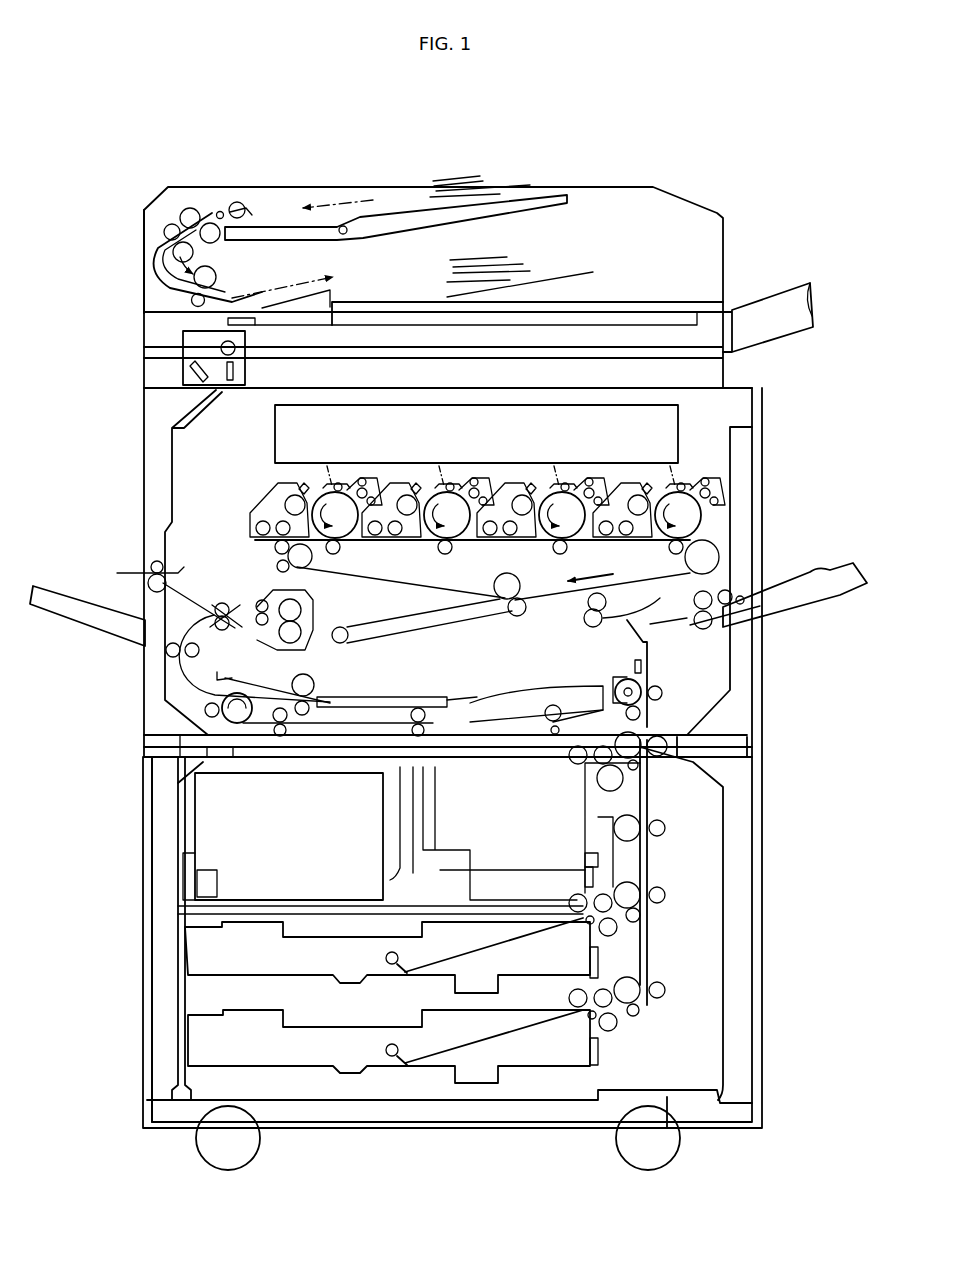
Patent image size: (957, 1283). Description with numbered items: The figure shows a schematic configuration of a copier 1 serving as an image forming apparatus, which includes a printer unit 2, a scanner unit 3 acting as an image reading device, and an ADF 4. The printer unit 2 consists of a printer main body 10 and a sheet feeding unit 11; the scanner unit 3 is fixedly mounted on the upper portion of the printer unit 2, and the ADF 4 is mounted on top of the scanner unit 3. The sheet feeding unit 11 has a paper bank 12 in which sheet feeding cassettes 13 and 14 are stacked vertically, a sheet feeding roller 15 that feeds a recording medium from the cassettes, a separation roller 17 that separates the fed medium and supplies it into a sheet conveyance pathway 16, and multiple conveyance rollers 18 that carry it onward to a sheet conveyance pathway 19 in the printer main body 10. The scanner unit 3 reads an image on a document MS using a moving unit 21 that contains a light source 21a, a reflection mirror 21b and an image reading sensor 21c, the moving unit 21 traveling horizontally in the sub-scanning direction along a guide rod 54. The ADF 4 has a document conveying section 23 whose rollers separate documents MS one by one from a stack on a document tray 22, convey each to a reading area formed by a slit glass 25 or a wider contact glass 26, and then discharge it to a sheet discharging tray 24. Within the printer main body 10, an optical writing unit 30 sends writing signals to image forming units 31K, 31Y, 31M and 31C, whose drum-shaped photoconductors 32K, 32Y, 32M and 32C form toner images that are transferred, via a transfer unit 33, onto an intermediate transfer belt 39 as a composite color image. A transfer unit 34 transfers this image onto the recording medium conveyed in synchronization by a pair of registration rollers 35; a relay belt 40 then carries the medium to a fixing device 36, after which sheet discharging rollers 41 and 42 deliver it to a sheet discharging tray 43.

The copier 1 is at (686, 155).
The printer unit 2 is at (795, 566).
The scanner unit 3 is at (133, 352).
The ADF 4 is at (138, 233).
The printer main body 10 is at (137, 475).
The sheet feeding unit 11 is at (136, 855).
The paper bank 12 is at (178, 967).
The sheet feeding cassette 13 is at (250, 905).
The sheet feeding cassette 14 is at (185, 1046).
The sheet feeding roller 15 is at (571, 901).
The sheet conveyance pathway 16 is at (645, 858).
The separation roller 17 is at (618, 935).
The conveyance rollers 18 is at (656, 760).
The sheet conveyance pathway 19 is at (648, 667).
The moving unit 21 is at (177, 369).
The light source 21a is at (222, 345).
The reflection mirror 21b is at (192, 385).
The image reading sensor 21c is at (236, 368).
The document tray 22 is at (385, 212).
The document conveying section 23 is at (207, 203).
The sheet discharging tray 24 is at (555, 275).
The slit glass 25 is at (253, 322).
The contact glass 26 is at (600, 327).
The optical writing unit 30 is at (680, 424).
The image forming unit 31K is at (333, 473).
The image forming unit 31Y is at (445, 473).
The image forming unit 31M is at (560, 473).
The image forming unit 31C is at (683, 472).
The photoconductor 32K is at (322, 488).
The photoconductor 32Y is at (434, 488).
The photoconductor 32M is at (549, 488).
The photoconductor 32C is at (663, 488).
The transfer unit 33 is at (262, 552).
The transfer unit 34 is at (528, 625).
The pair of registration rollers 35 is at (582, 628).
The fixing device 36 is at (305, 650).
The intermediate transfer belt 39 is at (343, 586).
The relay belt 40 is at (420, 637).
The sheet discharging roller 41 is at (220, 601).
The sheet discharging roller 42 is at (152, 553).
The sheet discharging tray 43 is at (85, 633).
The guide rod 54 is at (708, 360).
The document MS is at (513, 187).